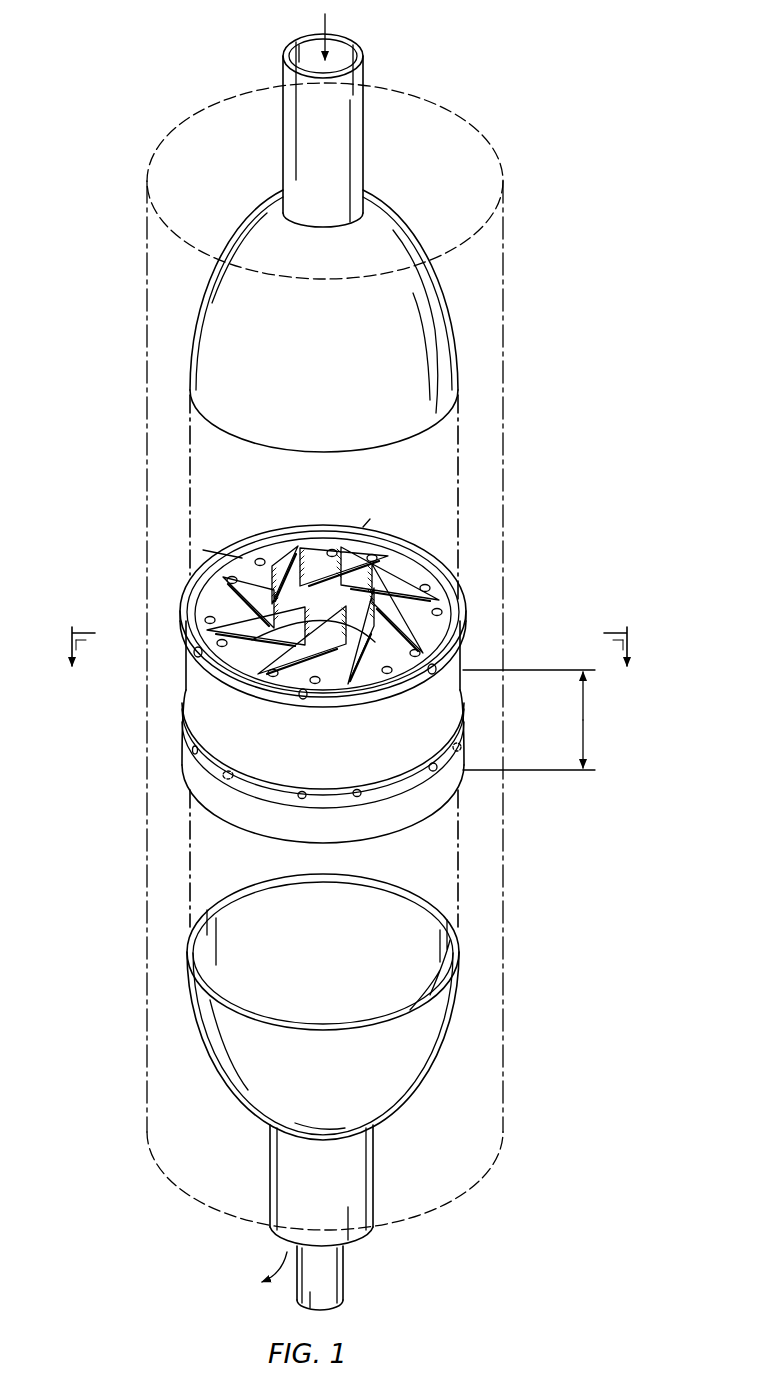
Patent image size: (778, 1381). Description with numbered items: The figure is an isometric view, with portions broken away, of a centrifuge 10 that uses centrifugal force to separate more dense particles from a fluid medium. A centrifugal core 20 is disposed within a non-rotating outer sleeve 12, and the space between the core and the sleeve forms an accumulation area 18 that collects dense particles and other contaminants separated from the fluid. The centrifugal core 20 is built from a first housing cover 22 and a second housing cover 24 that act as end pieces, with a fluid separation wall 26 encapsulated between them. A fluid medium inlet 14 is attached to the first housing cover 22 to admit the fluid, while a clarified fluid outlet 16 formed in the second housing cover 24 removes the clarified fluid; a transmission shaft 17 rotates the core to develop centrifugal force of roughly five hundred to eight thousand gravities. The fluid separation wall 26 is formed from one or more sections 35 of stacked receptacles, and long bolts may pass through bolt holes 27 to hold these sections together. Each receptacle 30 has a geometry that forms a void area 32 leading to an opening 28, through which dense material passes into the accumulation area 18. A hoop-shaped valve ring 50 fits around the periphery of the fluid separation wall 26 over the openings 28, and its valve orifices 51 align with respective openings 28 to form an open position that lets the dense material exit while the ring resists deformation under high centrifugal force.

The centrifuge 10 is at (124, 50).
The non-rotating outer sleeve 12 is at (503, 327).
The fluid medium inlet 14 is at (364, 120).
The clarified fluid outlet 16 is at (375, 1175).
The transmission shaft 17 is at (343, 1272).
The accumulation area 18 is at (158, 403).
The centrifugal core 20 is at (233, 196).
The first housing cover 22 is at (396, 210).
The second housing cover 24 is at (247, 1108).
The fluid separation wall 26 is at (423, 808).
The bolt holes 27 is at (198, 600).
The openings 28 is at (452, 610).
The receptacle 30 is at (282, 532).
The void area 32 is at (370, 580).
The section 35 is at (583, 736).
The valve ring 50 is at (212, 670).
The valve orifice 51 is at (437, 768).